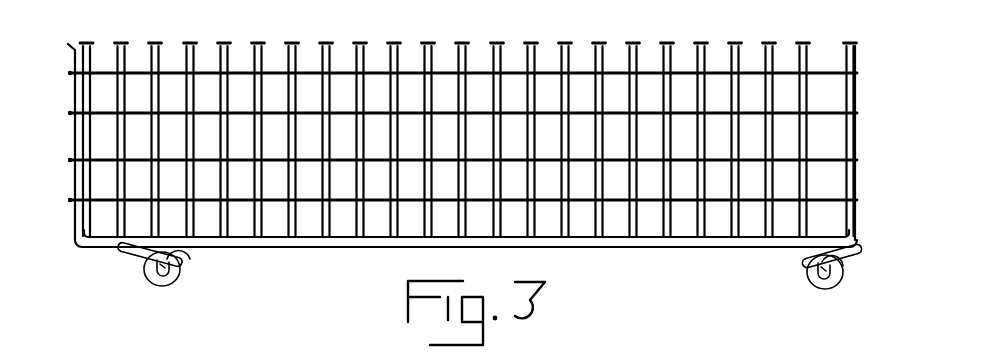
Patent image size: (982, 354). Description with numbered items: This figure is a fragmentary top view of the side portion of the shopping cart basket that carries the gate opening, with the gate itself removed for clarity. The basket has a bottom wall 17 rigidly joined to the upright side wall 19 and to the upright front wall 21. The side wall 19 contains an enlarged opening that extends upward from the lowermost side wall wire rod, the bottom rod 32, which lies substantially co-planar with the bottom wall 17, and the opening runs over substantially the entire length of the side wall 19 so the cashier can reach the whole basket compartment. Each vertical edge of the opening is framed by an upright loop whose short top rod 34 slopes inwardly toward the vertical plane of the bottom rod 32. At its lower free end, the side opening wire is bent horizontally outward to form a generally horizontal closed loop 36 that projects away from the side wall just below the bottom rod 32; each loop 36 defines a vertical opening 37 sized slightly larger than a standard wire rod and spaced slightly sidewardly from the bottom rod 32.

The bottom wall 17 is at (535, 82).
The side wall 19 is at (110, 253).
The front wall 21 is at (74, 146).
The bottom rod 32 is at (648, 245).
The short top rod 34 is at (186, 257).
The closed loop 36 is at (163, 285).
The opening 37 is at (150, 278).